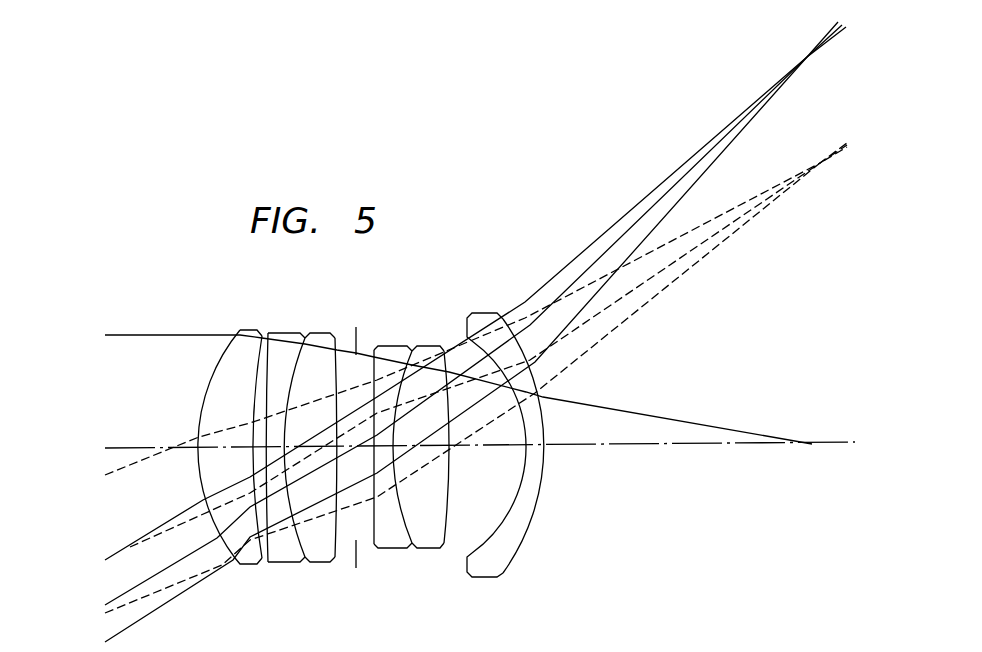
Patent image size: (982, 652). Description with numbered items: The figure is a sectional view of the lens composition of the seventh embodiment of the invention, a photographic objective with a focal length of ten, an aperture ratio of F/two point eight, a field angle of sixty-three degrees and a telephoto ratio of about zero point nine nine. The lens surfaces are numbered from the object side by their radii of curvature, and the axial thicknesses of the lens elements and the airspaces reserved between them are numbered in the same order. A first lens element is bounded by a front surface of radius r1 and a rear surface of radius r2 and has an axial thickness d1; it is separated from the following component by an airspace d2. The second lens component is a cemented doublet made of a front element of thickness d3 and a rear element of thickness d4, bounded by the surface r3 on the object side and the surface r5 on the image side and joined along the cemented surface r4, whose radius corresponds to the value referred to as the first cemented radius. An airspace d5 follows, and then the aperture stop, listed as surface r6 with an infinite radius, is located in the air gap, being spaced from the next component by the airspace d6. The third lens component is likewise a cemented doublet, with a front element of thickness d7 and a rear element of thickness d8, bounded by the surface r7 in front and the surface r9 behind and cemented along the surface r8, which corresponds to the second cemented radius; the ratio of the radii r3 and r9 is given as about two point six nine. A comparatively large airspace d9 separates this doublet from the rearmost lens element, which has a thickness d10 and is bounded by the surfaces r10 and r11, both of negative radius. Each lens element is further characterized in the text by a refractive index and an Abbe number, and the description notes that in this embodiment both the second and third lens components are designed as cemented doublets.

The radius of curvature of first surface r1 is at (225, 567).
The radius of curvature of second surface r2 is at (252, 545).
The radius of curvature of third surface r3 is at (277, 545).
The radius of curvature of fourth surface r4 is at (316, 562).
The radius of curvature of fifth surface r5 is at (337, 552).
The stop r6 is at (362, 573).
The radius of curvature of seventh surface r7 is at (374, 548).
The radius of curvature of eighth surface r8 is at (428, 548).
The radius of curvature of ninth surface r9 is at (452, 548).
The radius of curvature of tenth surface r10 is at (462, 553).
The radius of curvature of eleventh surface r11 is at (513, 565).
The thickness of first lens element d1 is at (231, 488).
The airspace between first and second lens components d2 is at (260, 445).
The thickness of front element of second lens component d3 is at (291, 489).
The thickness of rear element of second lens component d4 is at (328, 475).
The airspace between second lens component and stop d5 is at (346, 445).
The airspace between stop and third lens component d6 is at (362, 486).
The thickness of front element of third lens component d7 is at (401, 495).
The thickness of rear element of third lens component d8 is at (435, 482).
The airspace between third lens component and rearmost lens element d9 is at (497, 450).
The thickness of rearmost lens element d10 is at (527, 478).